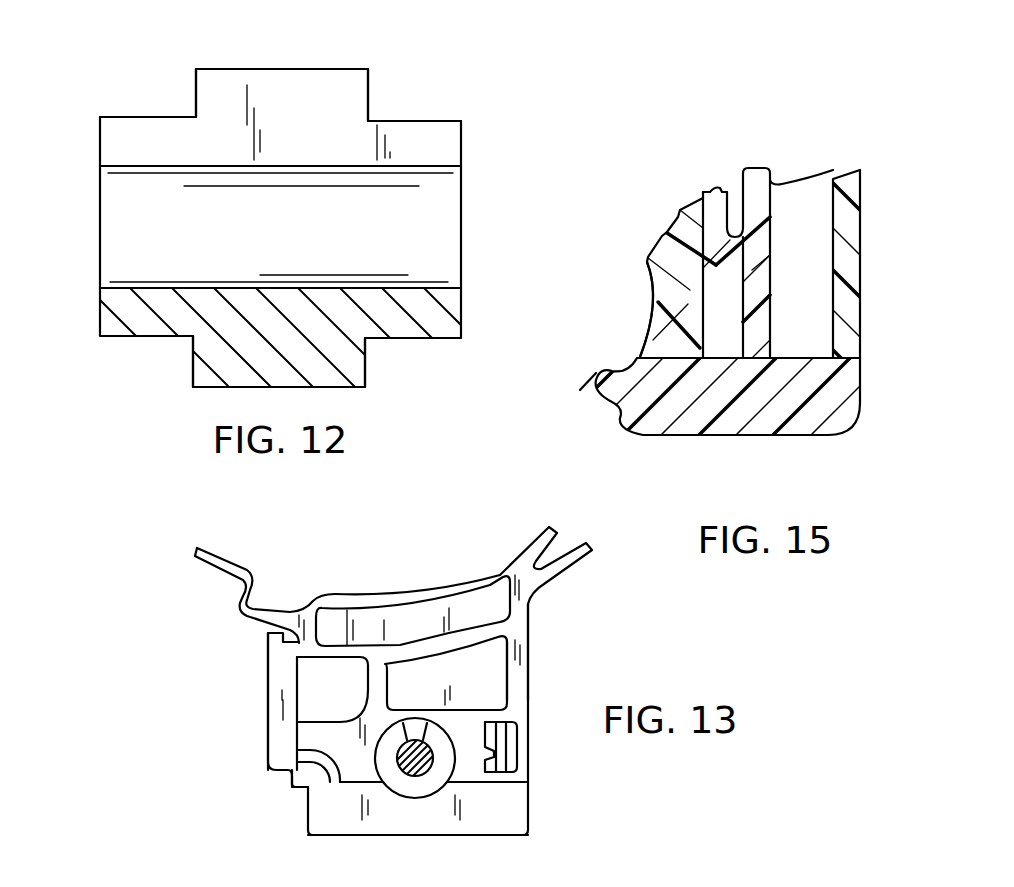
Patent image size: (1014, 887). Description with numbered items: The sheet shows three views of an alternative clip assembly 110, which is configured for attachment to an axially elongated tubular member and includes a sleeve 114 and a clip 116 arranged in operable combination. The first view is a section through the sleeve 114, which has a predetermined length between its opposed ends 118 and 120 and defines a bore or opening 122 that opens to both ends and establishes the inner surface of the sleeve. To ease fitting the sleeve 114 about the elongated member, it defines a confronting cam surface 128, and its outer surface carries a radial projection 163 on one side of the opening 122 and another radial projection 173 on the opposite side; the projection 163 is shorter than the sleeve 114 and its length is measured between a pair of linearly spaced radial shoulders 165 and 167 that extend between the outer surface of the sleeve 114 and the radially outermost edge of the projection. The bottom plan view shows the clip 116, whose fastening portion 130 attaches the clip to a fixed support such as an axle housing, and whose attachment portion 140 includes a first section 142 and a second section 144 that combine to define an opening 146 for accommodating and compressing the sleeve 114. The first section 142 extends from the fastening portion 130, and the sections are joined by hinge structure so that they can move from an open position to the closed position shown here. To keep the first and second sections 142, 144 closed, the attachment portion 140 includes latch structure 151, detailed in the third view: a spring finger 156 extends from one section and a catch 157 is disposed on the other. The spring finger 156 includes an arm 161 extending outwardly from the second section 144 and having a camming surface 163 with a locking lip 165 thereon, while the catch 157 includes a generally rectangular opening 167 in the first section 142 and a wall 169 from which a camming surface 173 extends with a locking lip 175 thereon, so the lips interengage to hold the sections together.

In FIG. 15, the clip assembly 110 is at (634, 303).
In FIG. 12, the sleeve 114 is at (246, 52).
In FIG. 13, the sleeve 114 is at (421, 806).
In FIG. 13, the clip 116 is at (417, 578).
In FIG. 12, the end of sleeve 118 is at (99, 309).
In FIG. 12, the end of sleeve 120 is at (462, 145).
In FIG. 12, the bore or opening 122 is at (120, 282).
In FIG. 12, the cam surface 128 is at (320, 80).
In FIG. 13, the fastening portion 130 is at (204, 575).
In FIG. 15, the attachment portion 140 is at (655, 215).
In FIG. 13, the attachment portion 140 is at (540, 696).
In FIG. 15, the first section 142 is at (660, 323).
In FIG. 13, the first section 142 is at (360, 770).
In FIG. 15, the second section 144 is at (825, 426).
In FIG. 13, the second section 144 is at (516, 817).
In FIG. 15, the opening 146 is at (564, 389).
In FIG. 13, the opening 146 is at (405, 788).
In FIG. 15, the latch structure 151 is at (798, 197).
In FIG. 13, the latch structure 151 is at (521, 752).
In FIG. 15, the spring finger 156 is at (758, 167).
In FIG. 15, the catch 157 is at (712, 300).
In FIG. 15, the arm 161 is at (757, 320).
In FIG. 12, the camming surface 163 is at (358, 84).
In FIG. 15, the camming surface 163 is at (722, 191).
In FIG. 12, the locking lip 165 is at (195, 96).
In FIG. 15, the locking lip 165 is at (656, 289).
In FIG. 12, the opening 167 is at (370, 95).
In FIG. 15, the wall 169 is at (703, 197).
In FIG. 12, the camming surface 173 is at (202, 375).
In FIG. 15, the camming surface 173 is at (768, 294).
In FIG. 15, the locking lip 175 is at (675, 242).